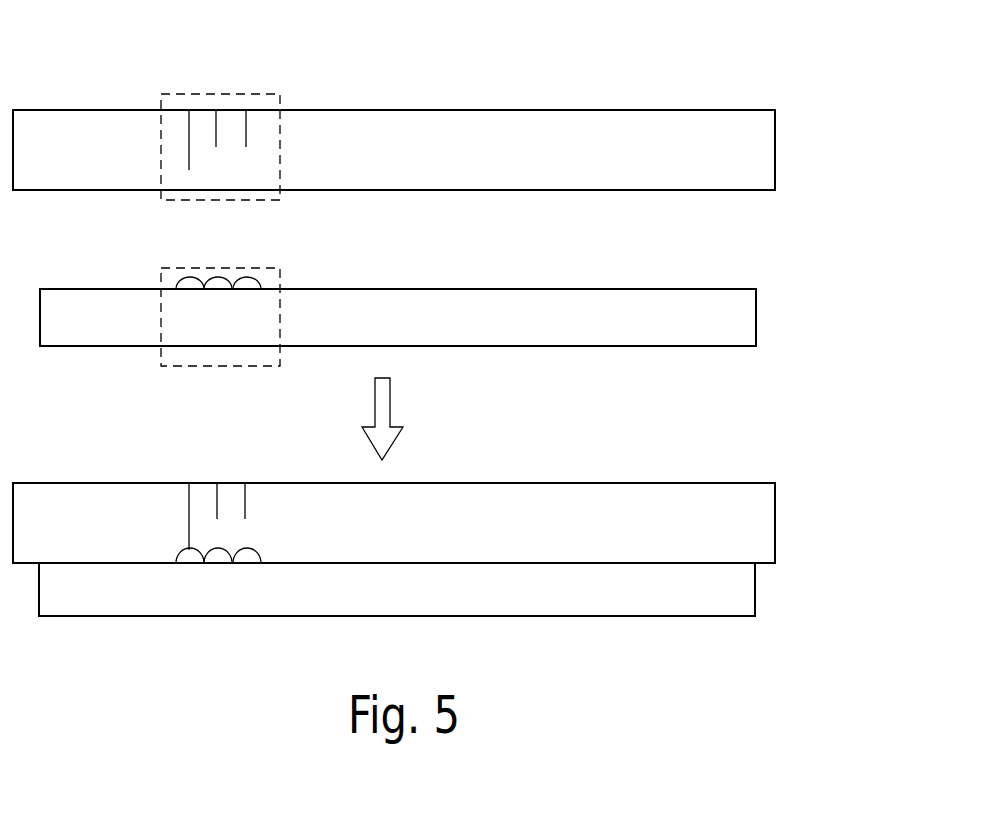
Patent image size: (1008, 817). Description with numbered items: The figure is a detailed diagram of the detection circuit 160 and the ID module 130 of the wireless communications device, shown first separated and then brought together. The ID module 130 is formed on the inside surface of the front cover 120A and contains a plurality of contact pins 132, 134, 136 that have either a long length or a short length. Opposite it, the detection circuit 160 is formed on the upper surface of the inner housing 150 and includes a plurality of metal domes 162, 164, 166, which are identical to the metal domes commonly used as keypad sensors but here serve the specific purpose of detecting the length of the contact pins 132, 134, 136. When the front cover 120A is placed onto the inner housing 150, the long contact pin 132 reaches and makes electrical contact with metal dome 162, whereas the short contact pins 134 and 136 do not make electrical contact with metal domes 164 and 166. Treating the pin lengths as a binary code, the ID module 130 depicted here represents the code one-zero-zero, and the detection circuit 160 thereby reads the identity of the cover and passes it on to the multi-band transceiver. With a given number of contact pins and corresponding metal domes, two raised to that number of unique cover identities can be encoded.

The front cover 120A is at (775, 154).
The inner housing 150 is at (756, 318).
The ID module 130 is at (255, 93).
The contact pin 132 is at (189, 123).
The contact pin 134 is at (216, 118).
The contact pin 136 is at (248, 113).
The detection circuit 160 is at (280, 362).
The metal dome 162 is at (178, 280).
The metal dome 164 is at (222, 275).
The metal dome 166 is at (262, 280).